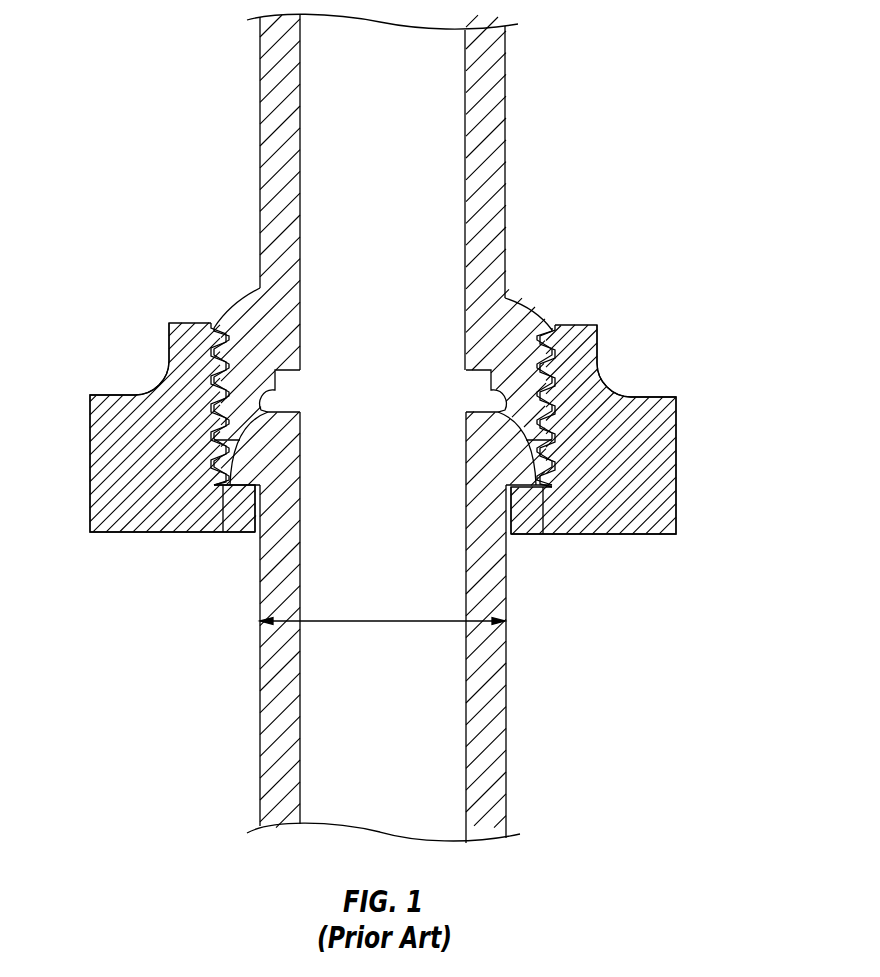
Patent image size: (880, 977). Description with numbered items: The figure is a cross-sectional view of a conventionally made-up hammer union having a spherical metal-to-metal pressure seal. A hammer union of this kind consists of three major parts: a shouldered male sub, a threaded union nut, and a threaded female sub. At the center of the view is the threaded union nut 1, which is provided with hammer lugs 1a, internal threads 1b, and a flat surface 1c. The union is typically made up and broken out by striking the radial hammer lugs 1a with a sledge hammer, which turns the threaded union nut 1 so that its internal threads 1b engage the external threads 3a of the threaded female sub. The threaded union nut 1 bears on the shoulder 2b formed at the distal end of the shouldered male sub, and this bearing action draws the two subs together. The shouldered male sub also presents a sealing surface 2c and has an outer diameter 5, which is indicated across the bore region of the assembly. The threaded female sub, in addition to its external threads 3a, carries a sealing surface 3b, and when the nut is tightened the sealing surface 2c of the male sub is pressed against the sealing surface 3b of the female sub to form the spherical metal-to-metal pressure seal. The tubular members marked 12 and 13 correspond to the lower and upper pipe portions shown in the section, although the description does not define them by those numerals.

The threaded union nut 1 is at (577, 324).
The hammer lugs 1a is at (90, 465).
The internal threads 1b is at (223, 533).
The flat surface 1c is at (607, 535).
The shoulder 2b is at (528, 533).
The sealing surface 2c is at (245, 441).
The external threads 3a is at (234, 304).
The sealing surface 3b is at (277, 384).
The outer diameter 5 is at (384, 620).
The lower tube 12 is at (508, 690).
The upper tube 13 is at (507, 178).